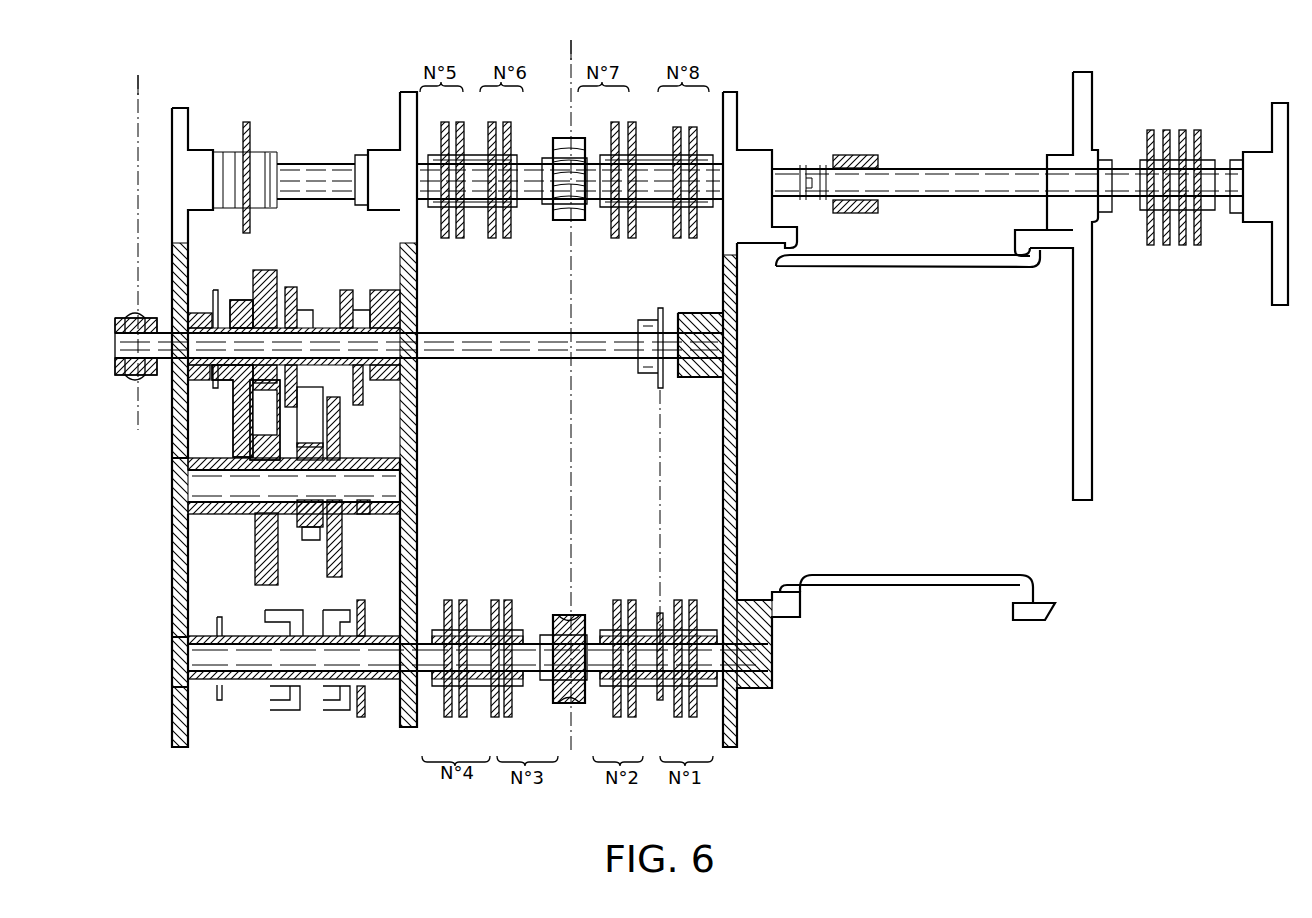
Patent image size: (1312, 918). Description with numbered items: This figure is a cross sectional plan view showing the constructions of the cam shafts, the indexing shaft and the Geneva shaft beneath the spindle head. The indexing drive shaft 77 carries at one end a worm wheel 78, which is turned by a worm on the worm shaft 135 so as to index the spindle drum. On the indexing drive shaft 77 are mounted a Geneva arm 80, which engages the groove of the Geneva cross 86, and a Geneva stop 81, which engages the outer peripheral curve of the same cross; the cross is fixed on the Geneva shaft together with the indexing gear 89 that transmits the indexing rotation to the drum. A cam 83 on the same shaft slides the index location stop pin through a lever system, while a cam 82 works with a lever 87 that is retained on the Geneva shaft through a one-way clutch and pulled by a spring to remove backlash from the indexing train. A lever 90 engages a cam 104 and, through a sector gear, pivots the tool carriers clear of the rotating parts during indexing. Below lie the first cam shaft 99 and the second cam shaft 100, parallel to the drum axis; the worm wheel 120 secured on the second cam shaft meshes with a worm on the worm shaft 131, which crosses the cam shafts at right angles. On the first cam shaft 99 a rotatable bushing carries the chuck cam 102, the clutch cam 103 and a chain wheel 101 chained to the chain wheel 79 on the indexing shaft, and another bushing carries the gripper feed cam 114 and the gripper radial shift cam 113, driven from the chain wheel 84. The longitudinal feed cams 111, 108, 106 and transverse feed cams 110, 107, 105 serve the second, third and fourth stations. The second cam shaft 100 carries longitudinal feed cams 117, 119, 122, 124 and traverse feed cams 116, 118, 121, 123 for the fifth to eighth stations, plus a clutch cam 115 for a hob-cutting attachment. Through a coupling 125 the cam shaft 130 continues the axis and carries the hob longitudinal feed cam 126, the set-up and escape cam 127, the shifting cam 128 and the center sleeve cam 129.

The indexing drive shaft 77 is at (118, 358).
The worm wheel 78 is at (135, 386).
The chain wheel 79 is at (214, 290).
The Geneva arm 80 is at (240, 300).
The Geneva stop 81 is at (266, 270).
The cam 82 is at (292, 288).
The cam 83 is at (350, 292).
The chain wheel 84 is at (652, 318).
The Geneva cross 86 is at (258, 556).
The lever 87 is at (312, 540).
The indexing gear 89 is at (342, 550).
The lever 90 is at (365, 515).
The first cam shaft 99 is at (188, 657).
The second cam shaft 100 is at (307, 175).
The chain wheel 101 is at (240, 692).
The cam 102 is at (281, 705).
The cam 103 is at (338, 712).
The cam 104 is at (361, 717).
The transverse feed cam 105 is at (448, 718).
The longitudinal feed cam 106 is at (463, 718).
The transverse feed cam 107 is at (495, 718).
The longitudinal feed cam 108 is at (509, 718).
The transverse feed cam 110 is at (617, 718).
The longitudinal feed cam 111 is at (632, 718).
The cam 113 is at (678, 718).
The cam 114 is at (693, 718).
The cam 115 is at (247, 123).
The traverse feed cam 116 is at (444, 124).
The longitudinal feed cam 117 is at (461, 124).
The traverse feed cam 118 is at (492, 124).
The longitudinal feed cam 119 is at (507, 124).
The worm wheel 120 is at (565, 224).
The traverse feed cam 121 is at (613, 124).
The longitudinal feed cam 122 is at (631, 124).
The traverse feed cam 123 is at (677, 128).
The longitudinal feed cam 124 is at (693, 128).
The coupling 125 is at (812, 162).
The longitudinal feed cam 126 is at (1149, 133).
The cam 127 is at (1167, 130).
The cam 128 is at (1183, 131).
The cam 129 is at (1199, 134).
The cam shaft 130 is at (935, 175).
The worm shaft 131 is at (571, 50).
The worm shaft 135 is at (140, 86).